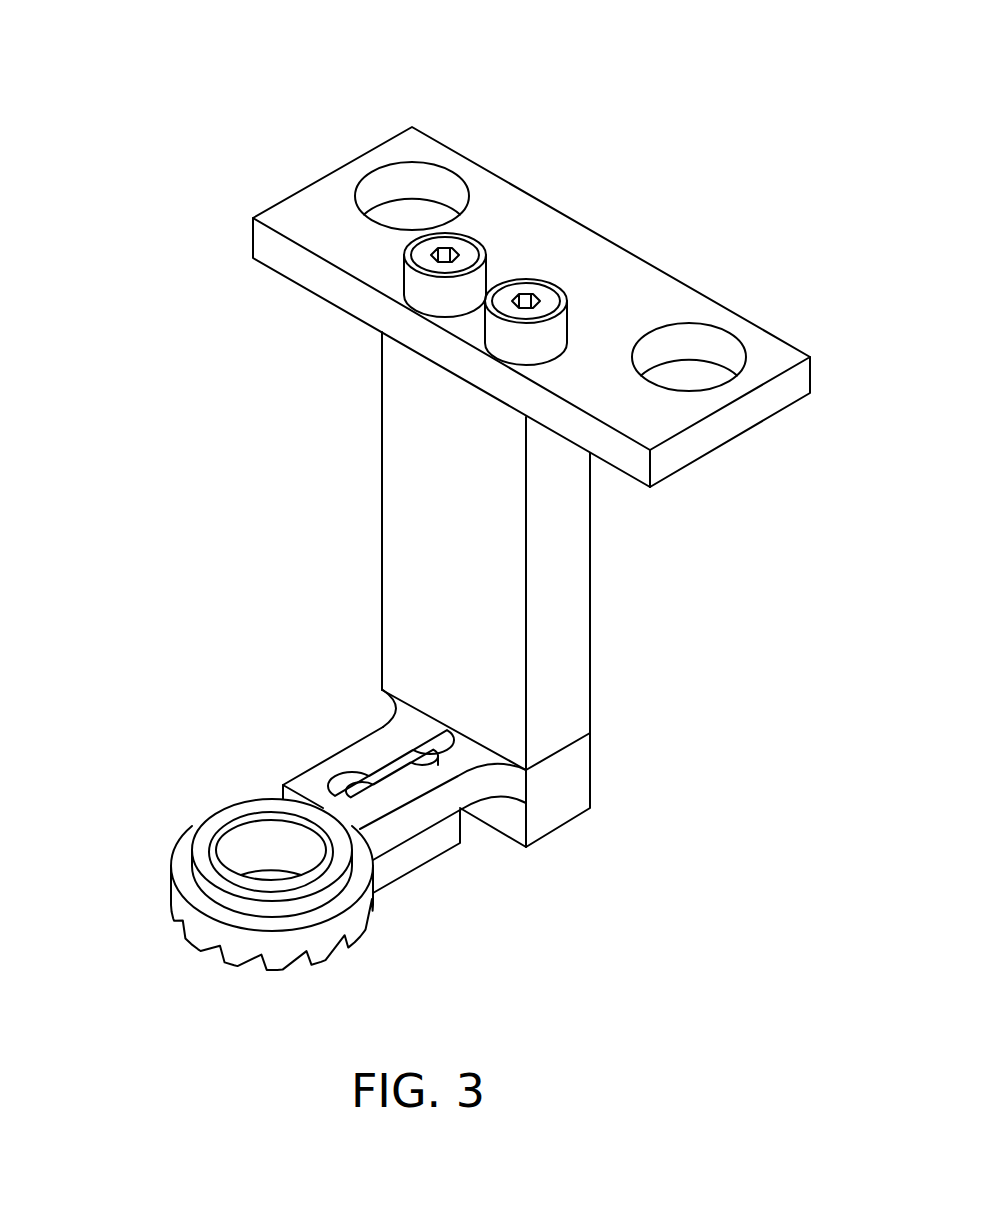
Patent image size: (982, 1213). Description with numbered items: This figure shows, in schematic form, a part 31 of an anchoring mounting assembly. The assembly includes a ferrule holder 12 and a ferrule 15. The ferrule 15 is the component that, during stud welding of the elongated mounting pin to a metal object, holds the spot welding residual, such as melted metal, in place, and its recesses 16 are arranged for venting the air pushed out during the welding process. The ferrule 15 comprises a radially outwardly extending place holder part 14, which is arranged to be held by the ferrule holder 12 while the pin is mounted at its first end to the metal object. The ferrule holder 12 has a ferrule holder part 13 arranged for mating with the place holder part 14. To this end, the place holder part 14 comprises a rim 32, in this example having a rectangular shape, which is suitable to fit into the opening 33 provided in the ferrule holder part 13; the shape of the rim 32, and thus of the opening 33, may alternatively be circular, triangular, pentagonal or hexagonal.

The part of an anchoring mounting assembly 31 is at (615, 120).
The ferrule holder 12 is at (573, 557).
The ferrule holder part 13 is at (412, 765).
The radially outwardly extending place holder part 14 is at (403, 860).
The ferrule 15 is at (214, 918).
The recesses 16 is at (305, 966).
The rim 32 is at (390, 775).
The opening 33 is at (373, 747).